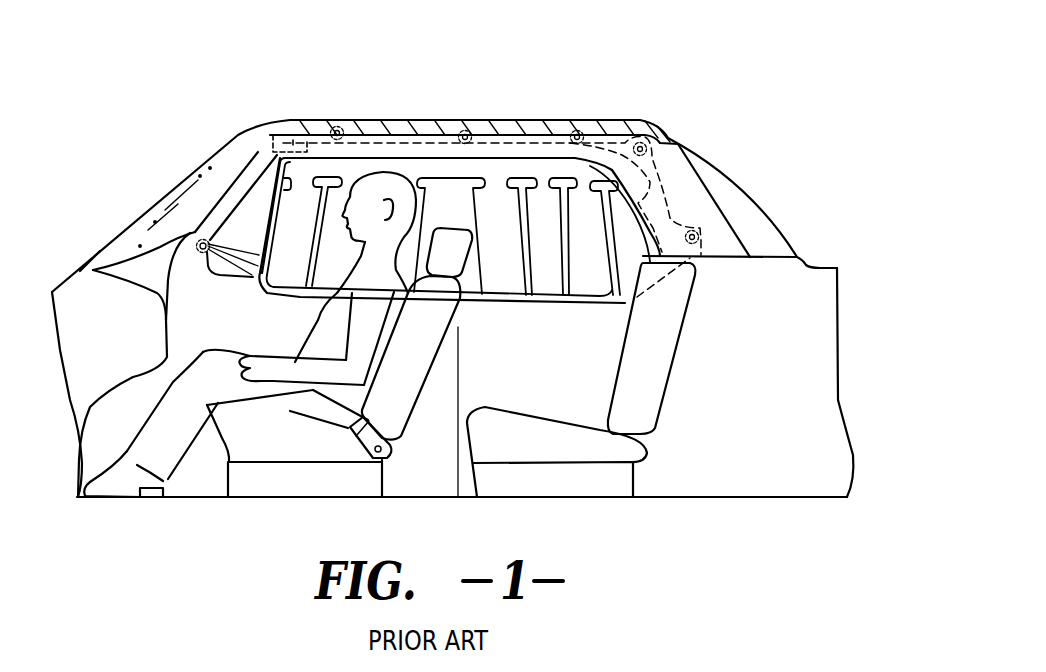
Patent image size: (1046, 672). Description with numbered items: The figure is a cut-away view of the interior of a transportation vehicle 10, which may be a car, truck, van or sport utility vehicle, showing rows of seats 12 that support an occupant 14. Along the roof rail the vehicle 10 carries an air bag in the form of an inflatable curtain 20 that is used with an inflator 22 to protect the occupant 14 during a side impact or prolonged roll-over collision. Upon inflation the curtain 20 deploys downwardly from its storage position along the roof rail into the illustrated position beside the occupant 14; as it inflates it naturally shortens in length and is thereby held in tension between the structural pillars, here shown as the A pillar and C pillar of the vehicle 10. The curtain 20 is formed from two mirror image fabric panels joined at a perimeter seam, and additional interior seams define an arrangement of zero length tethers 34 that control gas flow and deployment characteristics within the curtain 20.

The transportation vehicle 10 is at (637, 83).
The seats 12 is at (453, 310).
The occupant 14 is at (317, 327).
The inflatable curtain 20 is at (533, 303).
The inflator 22 is at (285, 119).
The zero length tethers 34 is at (319, 177).